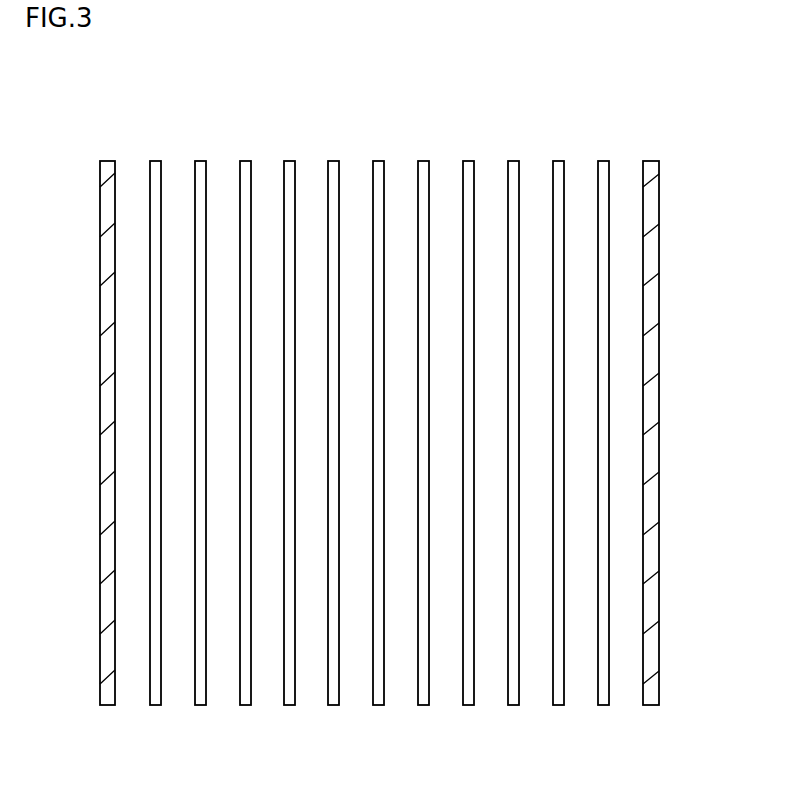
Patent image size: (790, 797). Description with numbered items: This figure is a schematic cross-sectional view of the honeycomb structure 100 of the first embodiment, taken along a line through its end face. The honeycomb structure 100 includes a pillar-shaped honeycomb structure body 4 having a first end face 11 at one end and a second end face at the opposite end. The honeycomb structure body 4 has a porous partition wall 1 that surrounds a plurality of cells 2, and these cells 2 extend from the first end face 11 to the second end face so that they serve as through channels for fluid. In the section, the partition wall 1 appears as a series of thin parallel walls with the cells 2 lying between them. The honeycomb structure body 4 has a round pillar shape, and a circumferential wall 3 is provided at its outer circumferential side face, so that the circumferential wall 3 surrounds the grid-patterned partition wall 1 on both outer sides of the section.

The honeycomb structure 100 is at (745, 68).
The first end face 11 is at (123, 143).
The partition wall 1 is at (557, 187).
The cell 2 is at (487, 222).
The circumferential wall 3 is at (100, 333).
The honeycomb structure body 4 is at (667, 168).